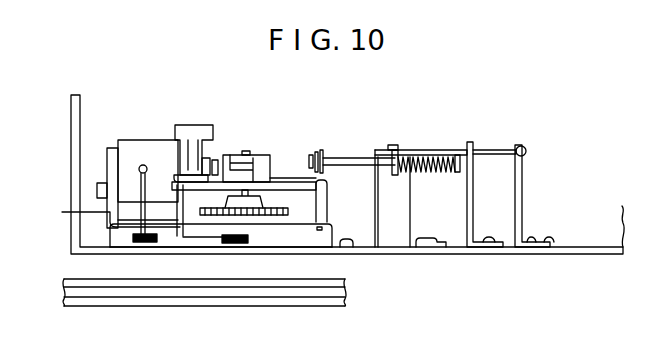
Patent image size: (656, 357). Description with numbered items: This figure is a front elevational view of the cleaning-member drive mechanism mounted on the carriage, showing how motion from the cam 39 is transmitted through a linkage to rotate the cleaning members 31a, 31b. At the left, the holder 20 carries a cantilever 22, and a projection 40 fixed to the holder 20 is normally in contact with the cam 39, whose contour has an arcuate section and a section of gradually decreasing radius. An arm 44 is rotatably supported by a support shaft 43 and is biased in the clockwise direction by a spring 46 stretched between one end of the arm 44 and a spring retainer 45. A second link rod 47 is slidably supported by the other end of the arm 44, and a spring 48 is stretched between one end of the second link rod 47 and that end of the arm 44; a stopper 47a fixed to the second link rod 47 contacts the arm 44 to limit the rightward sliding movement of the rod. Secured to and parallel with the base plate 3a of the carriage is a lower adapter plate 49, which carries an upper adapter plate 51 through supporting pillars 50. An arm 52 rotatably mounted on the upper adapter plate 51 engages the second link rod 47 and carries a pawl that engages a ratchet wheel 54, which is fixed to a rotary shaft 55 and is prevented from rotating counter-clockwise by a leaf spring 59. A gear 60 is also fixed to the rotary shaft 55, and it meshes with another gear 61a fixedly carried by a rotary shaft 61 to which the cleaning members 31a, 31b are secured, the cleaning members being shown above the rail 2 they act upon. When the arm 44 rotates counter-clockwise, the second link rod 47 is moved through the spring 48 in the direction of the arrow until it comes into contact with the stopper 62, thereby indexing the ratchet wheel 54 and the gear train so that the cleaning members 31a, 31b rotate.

The rail 2 is at (163, 284).
The base plate 3a is at (447, 252).
The holder 20 is at (127, 148).
The cantilever 22 is at (118, 212).
The cleaning member 31a is at (139, 244).
The cleaning member 31b is at (237, 244).
The cam 39 is at (195, 150).
The projection 40 is at (198, 125).
The support shaft 43 is at (397, 240).
The arm 44 is at (433, 148).
The spring retainer 45 is at (524, 192).
The spring 46 is at (525, 146).
The second link rod 47 is at (338, 158).
The stopper 47a is at (372, 164).
The spring 48 is at (416, 168).
The lower adapter plate 49 is at (298, 228).
The supporting pillars 50 is at (327, 200).
The upper adapter plate 51 is at (287, 180).
The arm 52 is at (293, 176).
The ratchet wheel 54 is at (237, 153).
The rotary shaft 55 is at (238, 243).
The leaf spring 59 is at (248, 151).
The gear 60 is at (268, 218).
The rotary shaft 61 is at (167, 183).
The gear 61a is at (181, 240).
The stopper 62 is at (474, 170).